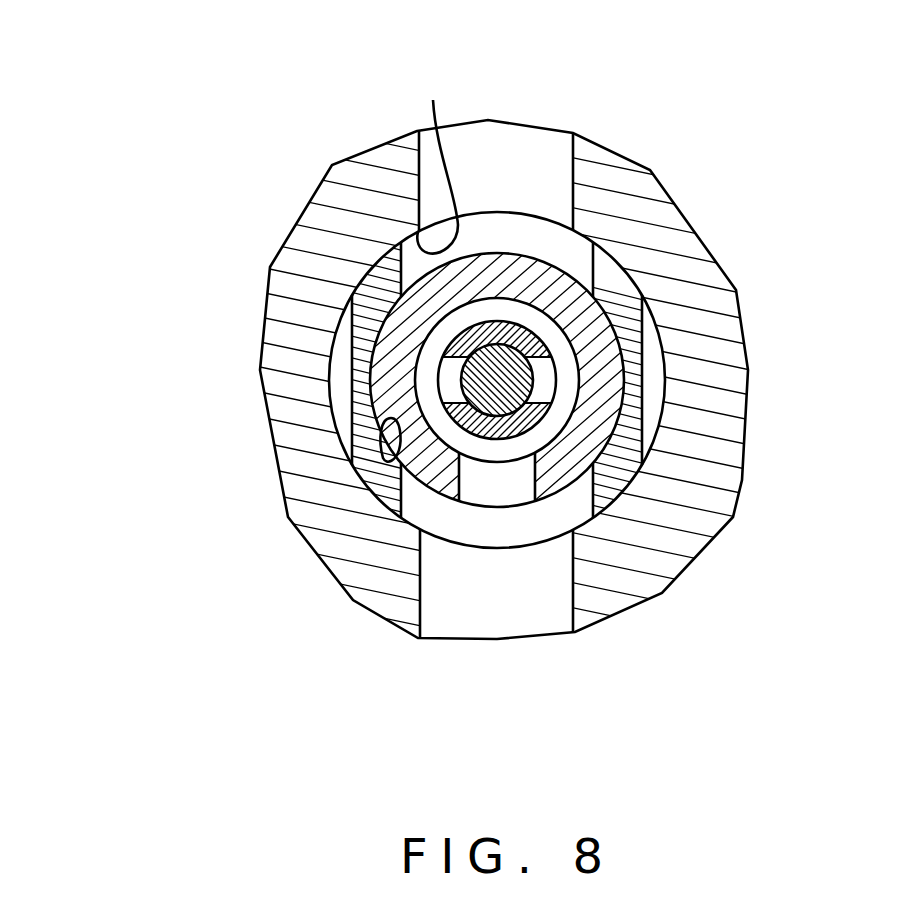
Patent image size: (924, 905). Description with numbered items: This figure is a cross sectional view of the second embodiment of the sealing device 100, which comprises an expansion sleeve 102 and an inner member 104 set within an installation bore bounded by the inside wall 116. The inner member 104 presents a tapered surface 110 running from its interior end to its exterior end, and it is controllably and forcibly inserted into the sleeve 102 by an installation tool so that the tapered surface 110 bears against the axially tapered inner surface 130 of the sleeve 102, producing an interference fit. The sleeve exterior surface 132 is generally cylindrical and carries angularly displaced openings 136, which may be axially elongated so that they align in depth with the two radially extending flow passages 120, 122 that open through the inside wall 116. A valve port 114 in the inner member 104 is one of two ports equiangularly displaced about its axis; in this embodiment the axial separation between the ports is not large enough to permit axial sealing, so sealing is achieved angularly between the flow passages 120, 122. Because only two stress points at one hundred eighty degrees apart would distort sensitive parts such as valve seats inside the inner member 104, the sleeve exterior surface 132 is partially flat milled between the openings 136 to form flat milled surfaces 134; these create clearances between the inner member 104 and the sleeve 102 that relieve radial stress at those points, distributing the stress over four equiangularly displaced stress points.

The sealing device 100 is at (635, 265).
The expansion sleeve 102 is at (632, 318).
The inner member 104 is at (635, 453).
The tapered surface 110 is at (577, 277).
The valve port 114 is at (512, 490).
The inside wall of installation bore 116 is at (433, 100).
The flow passage 120 is at (508, 140).
The flow passage 122 is at (452, 623).
The axially tapered inner surface 130 is at (398, 452).
The sleeve exterior surface 132 is at (375, 456).
The flat milled surface 134 is at (352, 386).
The opening 136 is at (445, 522).